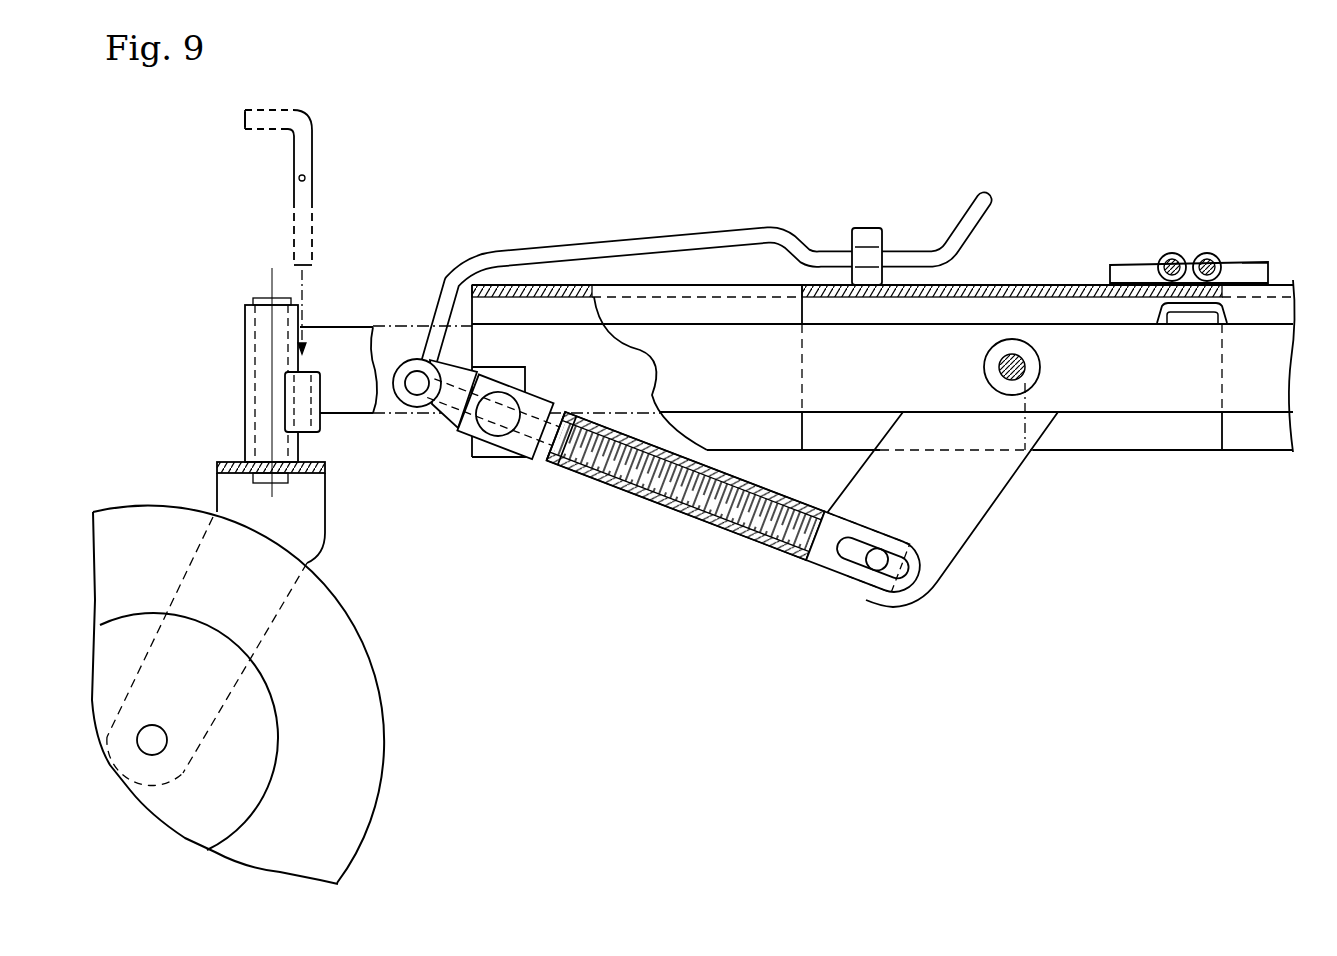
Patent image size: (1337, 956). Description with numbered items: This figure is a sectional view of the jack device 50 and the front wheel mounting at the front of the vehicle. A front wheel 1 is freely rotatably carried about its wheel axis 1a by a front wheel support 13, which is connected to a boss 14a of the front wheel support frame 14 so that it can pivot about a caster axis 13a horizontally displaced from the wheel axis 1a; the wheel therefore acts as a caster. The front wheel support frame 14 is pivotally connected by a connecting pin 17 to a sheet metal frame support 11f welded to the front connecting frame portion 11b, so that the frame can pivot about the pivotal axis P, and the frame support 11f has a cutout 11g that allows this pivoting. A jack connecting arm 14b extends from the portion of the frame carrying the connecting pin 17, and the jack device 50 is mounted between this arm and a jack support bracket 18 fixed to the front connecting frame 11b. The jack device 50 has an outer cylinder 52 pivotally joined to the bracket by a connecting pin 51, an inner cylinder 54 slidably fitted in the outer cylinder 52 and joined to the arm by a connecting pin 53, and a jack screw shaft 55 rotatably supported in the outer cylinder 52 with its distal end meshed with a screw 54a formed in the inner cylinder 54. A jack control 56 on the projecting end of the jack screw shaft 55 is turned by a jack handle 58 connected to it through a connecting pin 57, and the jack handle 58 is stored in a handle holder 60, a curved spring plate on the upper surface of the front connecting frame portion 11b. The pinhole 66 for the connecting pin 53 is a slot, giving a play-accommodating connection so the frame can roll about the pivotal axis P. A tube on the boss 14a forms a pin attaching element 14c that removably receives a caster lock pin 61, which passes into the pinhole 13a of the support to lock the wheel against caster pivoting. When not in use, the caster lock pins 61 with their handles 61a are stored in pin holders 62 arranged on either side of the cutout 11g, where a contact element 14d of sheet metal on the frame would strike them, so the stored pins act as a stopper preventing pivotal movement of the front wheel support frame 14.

The front wheel 1 is at (387, 737).
The axis of front wheel 1a is at (160, 748).
The front wheel support 13 is at (217, 487).
The caster axis 13a is at (262, 280).
The front wheel support frame 14 is at (343, 327).
The boss 14a is at (245, 375).
The jack connecting arm 14b is at (992, 503).
The pin attaching element 14c is at (322, 398).
The contact element 14d is at (1152, 300).
The connecting pin 17 is at (998, 368).
The pivotal axis P is at (1020, 385).
The front connecting frame portion 11b is at (652, 290).
The frame support 11f is at (922, 285).
The cutout 11g is at (1068, 278).
The jack support bracket 18 is at (483, 455).
The jack device 50 is at (665, 517).
The connecting pin 51 is at (493, 432).
The outer cylinder 52 is at (686, 486).
The connecting pin 53 is at (880, 558).
The inner cylinder 54 is at (686, 486).
The screw 54a is at (562, 438).
The jack screw shaft 55 is at (823, 562).
The jack control 56 is at (421, 405).
The connecting pin 57 is at (412, 357).
The jack handle 58 is at (765, 235).
The handle holder 60 is at (868, 228).
The caster lock pin 61 is at (312, 160).
The handle 61a is at (243, 121).
The pin holder 62 is at (1201, 257).
The pinhole 66 is at (910, 583).